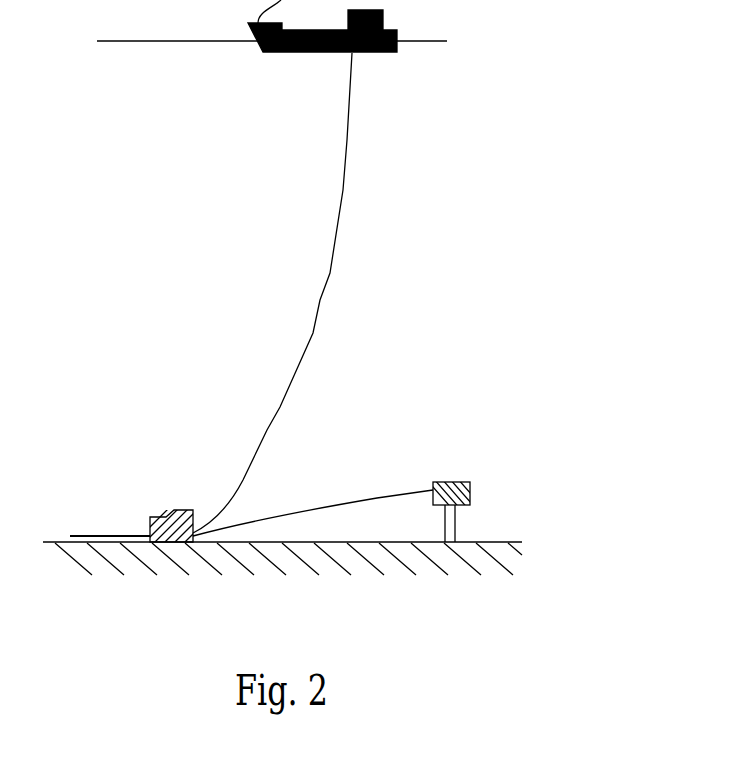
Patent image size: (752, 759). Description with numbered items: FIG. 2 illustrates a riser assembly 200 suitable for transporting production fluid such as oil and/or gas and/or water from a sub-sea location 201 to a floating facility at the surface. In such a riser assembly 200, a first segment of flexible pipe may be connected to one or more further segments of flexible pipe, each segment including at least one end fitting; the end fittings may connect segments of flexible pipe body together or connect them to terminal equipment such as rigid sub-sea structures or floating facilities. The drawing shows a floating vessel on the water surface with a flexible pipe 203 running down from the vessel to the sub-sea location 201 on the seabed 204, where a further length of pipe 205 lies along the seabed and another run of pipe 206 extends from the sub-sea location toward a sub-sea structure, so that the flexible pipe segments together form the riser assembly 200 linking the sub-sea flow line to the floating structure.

The riser assembly 200 is at (360, 243).
The sub-sea location 201 is at (158, 516).
The cable between vessel and seabed 203 is at (268, 425).
The seabed 204 is at (323, 542).
The cable laid on seabed 205 is at (113, 534).
The cable to buoy / marker 206 is at (378, 498).